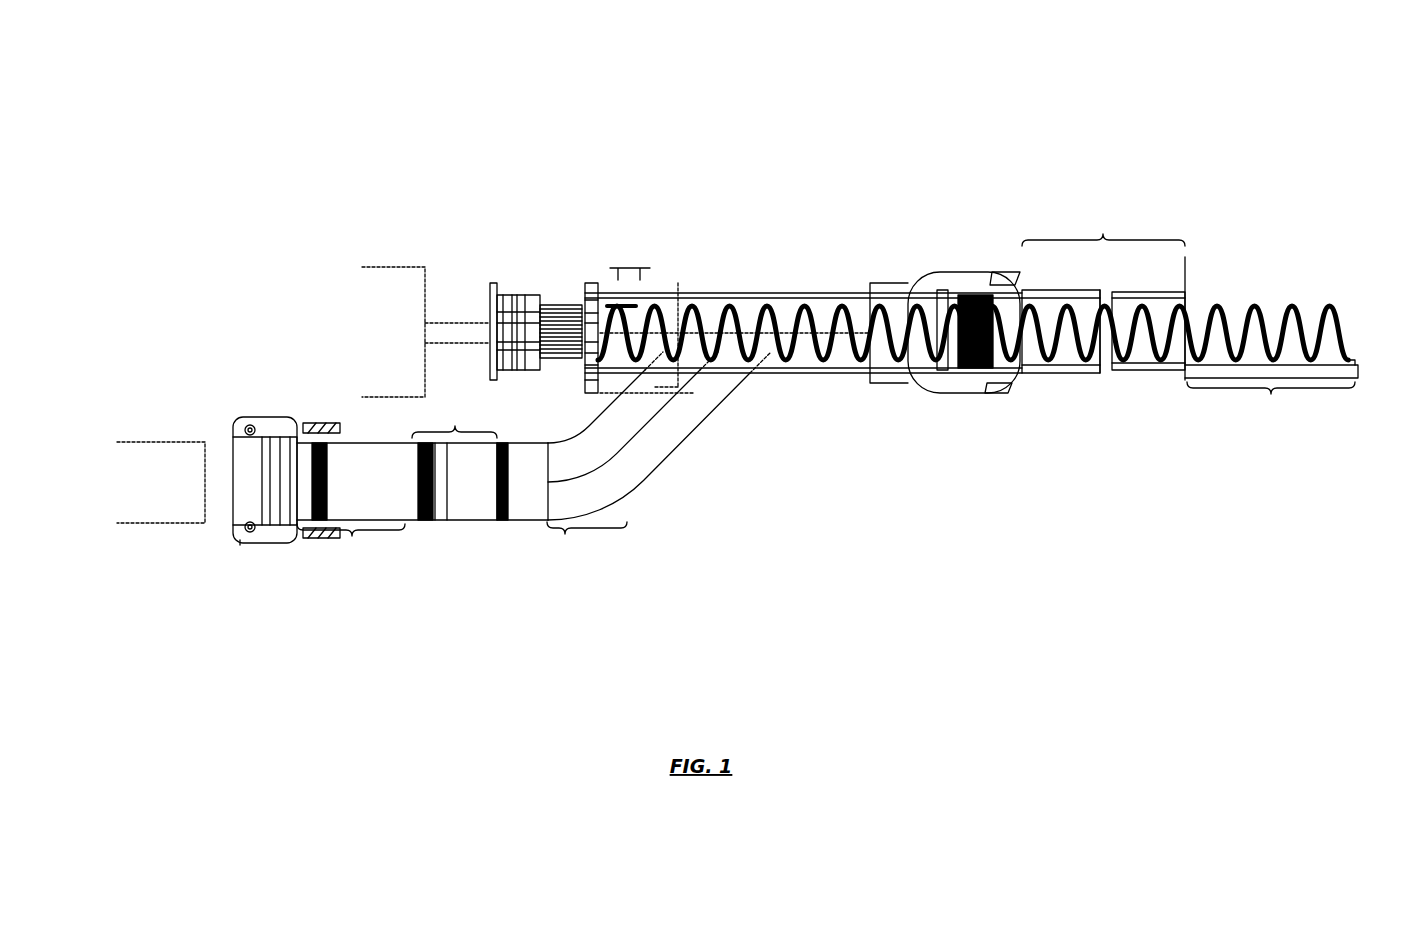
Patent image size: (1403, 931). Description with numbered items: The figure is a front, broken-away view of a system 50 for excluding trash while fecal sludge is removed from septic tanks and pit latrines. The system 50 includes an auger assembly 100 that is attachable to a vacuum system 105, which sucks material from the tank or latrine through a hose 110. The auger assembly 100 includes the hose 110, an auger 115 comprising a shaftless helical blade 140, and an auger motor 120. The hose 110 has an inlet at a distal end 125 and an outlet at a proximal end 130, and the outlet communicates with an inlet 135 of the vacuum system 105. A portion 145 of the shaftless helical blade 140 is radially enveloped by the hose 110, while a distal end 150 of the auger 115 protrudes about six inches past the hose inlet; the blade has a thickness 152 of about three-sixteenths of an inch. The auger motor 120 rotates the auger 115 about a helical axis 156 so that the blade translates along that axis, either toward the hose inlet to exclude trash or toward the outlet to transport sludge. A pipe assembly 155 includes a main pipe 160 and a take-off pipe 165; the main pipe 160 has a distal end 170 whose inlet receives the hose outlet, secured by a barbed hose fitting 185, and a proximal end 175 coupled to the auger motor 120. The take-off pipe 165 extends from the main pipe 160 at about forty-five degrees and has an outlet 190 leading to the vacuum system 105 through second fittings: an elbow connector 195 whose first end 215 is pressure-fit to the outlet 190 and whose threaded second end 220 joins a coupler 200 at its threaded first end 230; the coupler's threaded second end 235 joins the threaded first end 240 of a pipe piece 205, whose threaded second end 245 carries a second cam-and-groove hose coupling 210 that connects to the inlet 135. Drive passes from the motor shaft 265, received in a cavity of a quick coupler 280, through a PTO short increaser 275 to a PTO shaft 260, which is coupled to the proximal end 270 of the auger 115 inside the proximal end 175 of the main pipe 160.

The system 50 is at (343, 100).
The auger assembly 100 is at (638, 171).
The vacuum system 105 is at (163, 442).
The hose 110 is at (1103, 225).
The auger 115 is at (1222, 300).
The auger motor 120 is at (378, 264).
The distal end 125 is at (1187, 262).
The proximal end 130 is at (1020, 300).
The inlet 135 is at (205, 442).
The shaftless helical blade 140 is at (1355, 340).
The portion 145 is at (1110, 362).
The distal end 150 is at (1271, 397).
The thickness 152 is at (617, 307).
The pipe assembly 155 is at (780, 395).
The helical axis 156 is at (825, 320).
The main pipe 160 is at (758, 293).
The take-off pipe 165 is at (690, 438).
The distal end 170 is at (870, 292).
The proximal end 175 is at (540, 305).
The barbed hose fitting 185 is at (1035, 374).
The outlet 190 is at (587, 424).
The elbow connector 195 is at (583, 501).
The coupler 200 is at (454, 416).
The pipe piece 205 is at (422, 501).
The second cam-and-groove hose coupling 210 is at (255, 538).
The first end 215 is at (632, 487).
The second end 220 is at (497, 442).
The threaded first end 230 is at (505, 521).
The threaded second end 235 is at (437, 495).
The threaded first end 240 is at (438, 492).
The threaded second end 245 is at (335, 462).
The PTO shaft 260 is at (678, 283).
The motor shaft 265 is at (440, 330).
The proximal end 270 is at (624, 317).
The PTO short increaser 275 is at (585, 320).
The quick coupler 280 is at (583, 289).